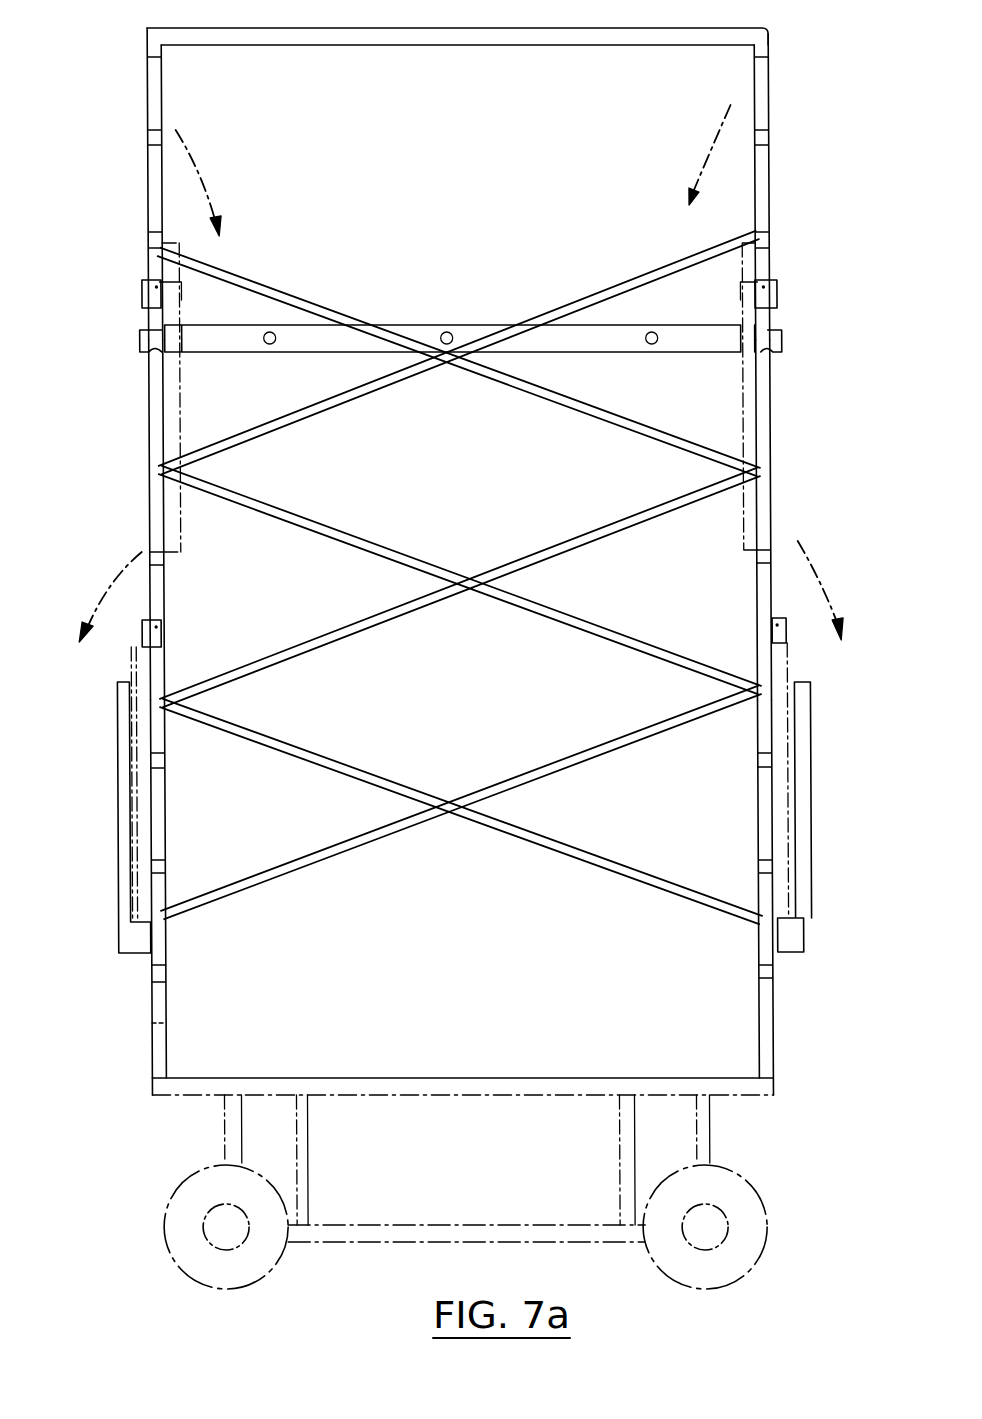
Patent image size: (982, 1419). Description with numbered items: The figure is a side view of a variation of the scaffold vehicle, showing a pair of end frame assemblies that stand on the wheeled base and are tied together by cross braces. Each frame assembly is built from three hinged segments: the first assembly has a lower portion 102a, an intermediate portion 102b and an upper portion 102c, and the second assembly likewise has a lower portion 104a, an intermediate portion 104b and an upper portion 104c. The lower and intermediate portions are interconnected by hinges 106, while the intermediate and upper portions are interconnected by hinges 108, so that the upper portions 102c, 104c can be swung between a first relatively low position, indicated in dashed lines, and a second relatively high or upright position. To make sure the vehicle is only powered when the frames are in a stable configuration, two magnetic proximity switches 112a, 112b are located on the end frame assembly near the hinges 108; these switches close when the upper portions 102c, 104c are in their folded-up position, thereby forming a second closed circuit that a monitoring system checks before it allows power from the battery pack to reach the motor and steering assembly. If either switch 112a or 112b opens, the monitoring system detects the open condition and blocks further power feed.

The lower portion 102a is at (147, 991).
The intermediate portion 102b is at (147, 501).
The upper portion 102c is at (147, 177).
The lower portion 104a is at (769, 989).
The intermediate portion 104b is at (769, 510).
The upper portion 104c is at (767, 176).
The hinge 106 is at (139, 633).
The hinge 108 is at (140, 297).
The switch 112a is at (128, 264).
The switch 112b is at (787, 262).